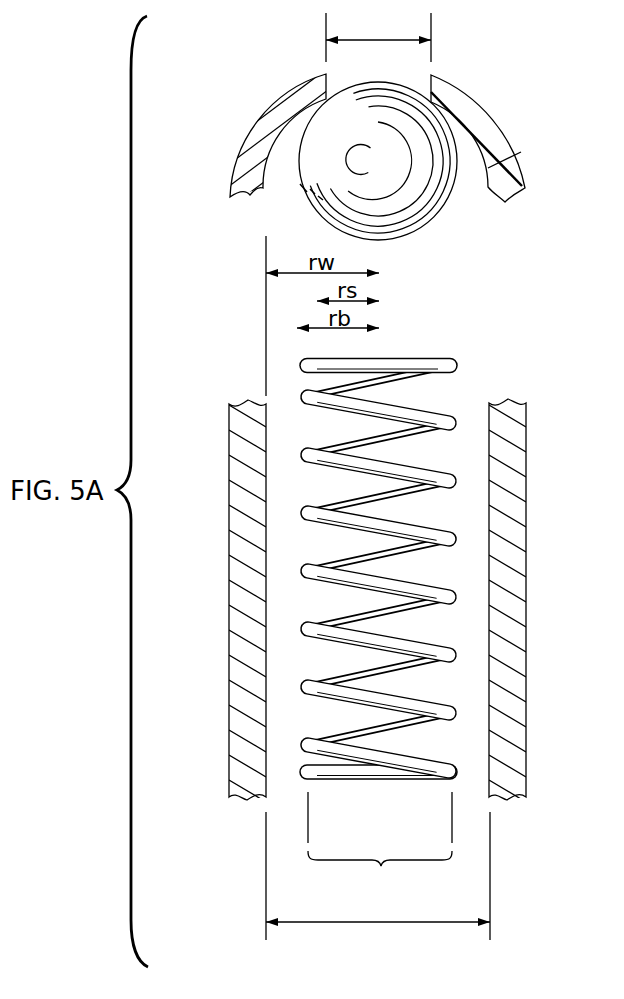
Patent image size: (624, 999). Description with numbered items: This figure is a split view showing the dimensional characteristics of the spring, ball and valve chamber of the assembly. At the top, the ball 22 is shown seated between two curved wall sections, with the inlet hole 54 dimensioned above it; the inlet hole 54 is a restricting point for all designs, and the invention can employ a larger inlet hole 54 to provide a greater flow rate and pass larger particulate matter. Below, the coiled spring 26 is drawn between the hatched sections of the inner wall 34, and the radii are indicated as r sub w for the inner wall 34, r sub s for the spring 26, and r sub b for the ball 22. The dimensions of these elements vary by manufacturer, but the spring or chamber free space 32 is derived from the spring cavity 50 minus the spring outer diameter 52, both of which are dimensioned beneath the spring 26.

The ball 22 is at (434, 217).
The spring 26 is at (307, 515).
The chamber free space 32 is at (468, 762).
The inner wall 34 is at (230, 680).
The spring cavity 50 is at (378, 920).
The spring outer diameter 52 is at (380, 843).
The inlet hole 54 is at (367, 40).